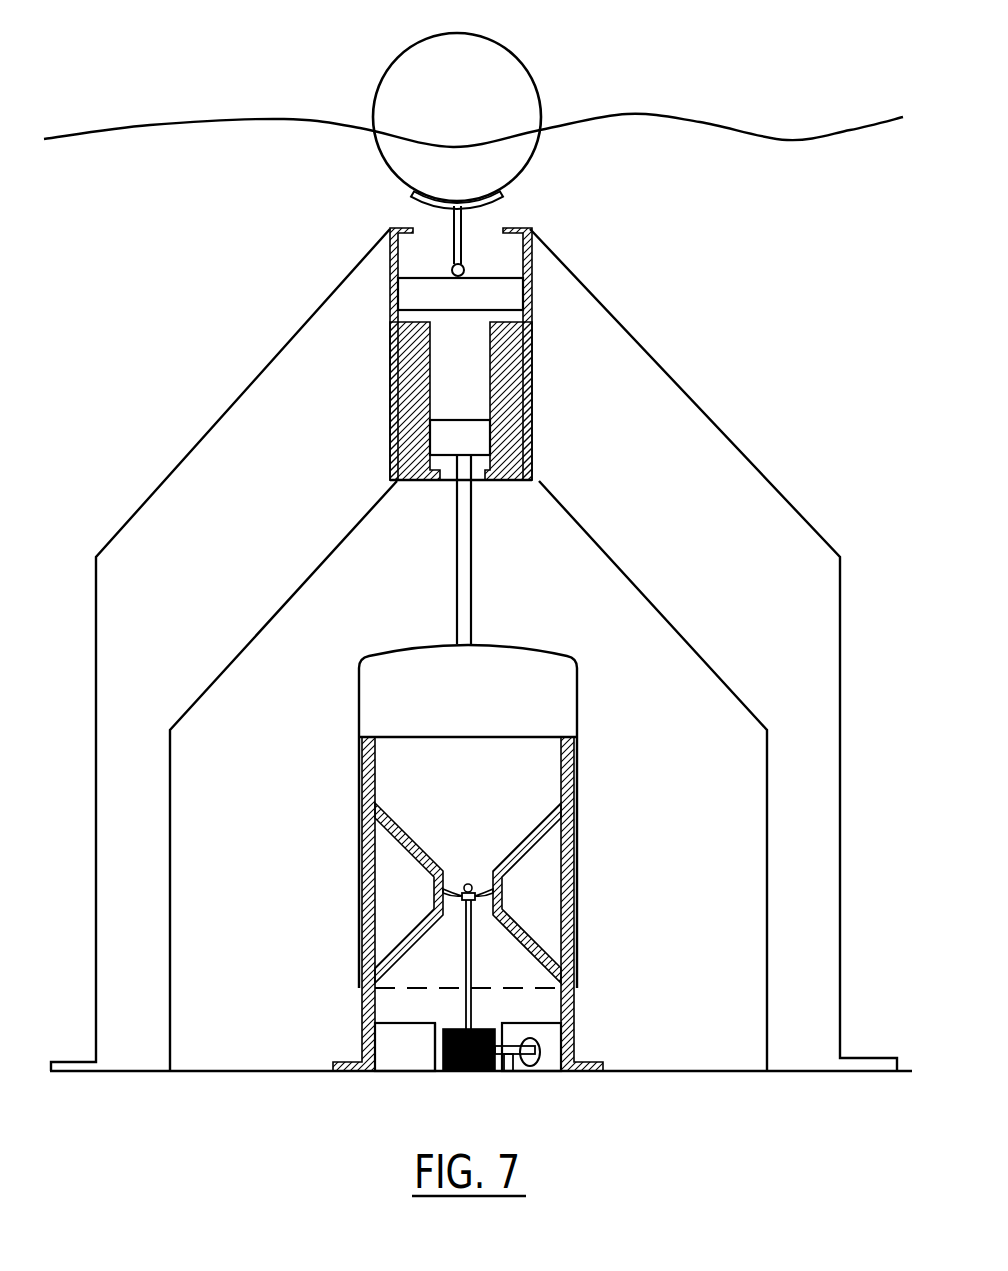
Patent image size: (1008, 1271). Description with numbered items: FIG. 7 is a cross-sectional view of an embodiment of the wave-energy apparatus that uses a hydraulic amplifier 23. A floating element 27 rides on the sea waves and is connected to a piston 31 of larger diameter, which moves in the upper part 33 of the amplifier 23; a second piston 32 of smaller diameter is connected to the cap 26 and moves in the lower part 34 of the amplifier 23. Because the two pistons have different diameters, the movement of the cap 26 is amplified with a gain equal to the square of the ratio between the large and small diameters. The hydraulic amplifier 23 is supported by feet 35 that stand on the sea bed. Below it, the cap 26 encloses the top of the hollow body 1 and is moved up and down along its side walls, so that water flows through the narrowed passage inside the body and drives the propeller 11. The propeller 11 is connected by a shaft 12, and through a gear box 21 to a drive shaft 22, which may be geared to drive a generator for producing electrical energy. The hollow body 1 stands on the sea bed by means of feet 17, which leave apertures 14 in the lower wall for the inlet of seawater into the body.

The hollow body 1 is at (575, 1000).
The propeller 11 is at (466, 888).
The shaft 12 is at (472, 958).
The apertures 14 is at (408, 1060).
The feet 17 is at (438, 1075).
The gear box 21 is at (473, 1076).
The drive shaft 22 is at (513, 1075).
The hydraulic amplifier 23 is at (523, 353).
The cap 26 is at (507, 645).
The floating element 27 is at (512, 84).
The piston 31 is at (485, 291).
The piston 32 is at (458, 437).
The upper part 33 is at (533, 282).
The lower part 34 is at (530, 437).
The feet 35 is at (262, 431).